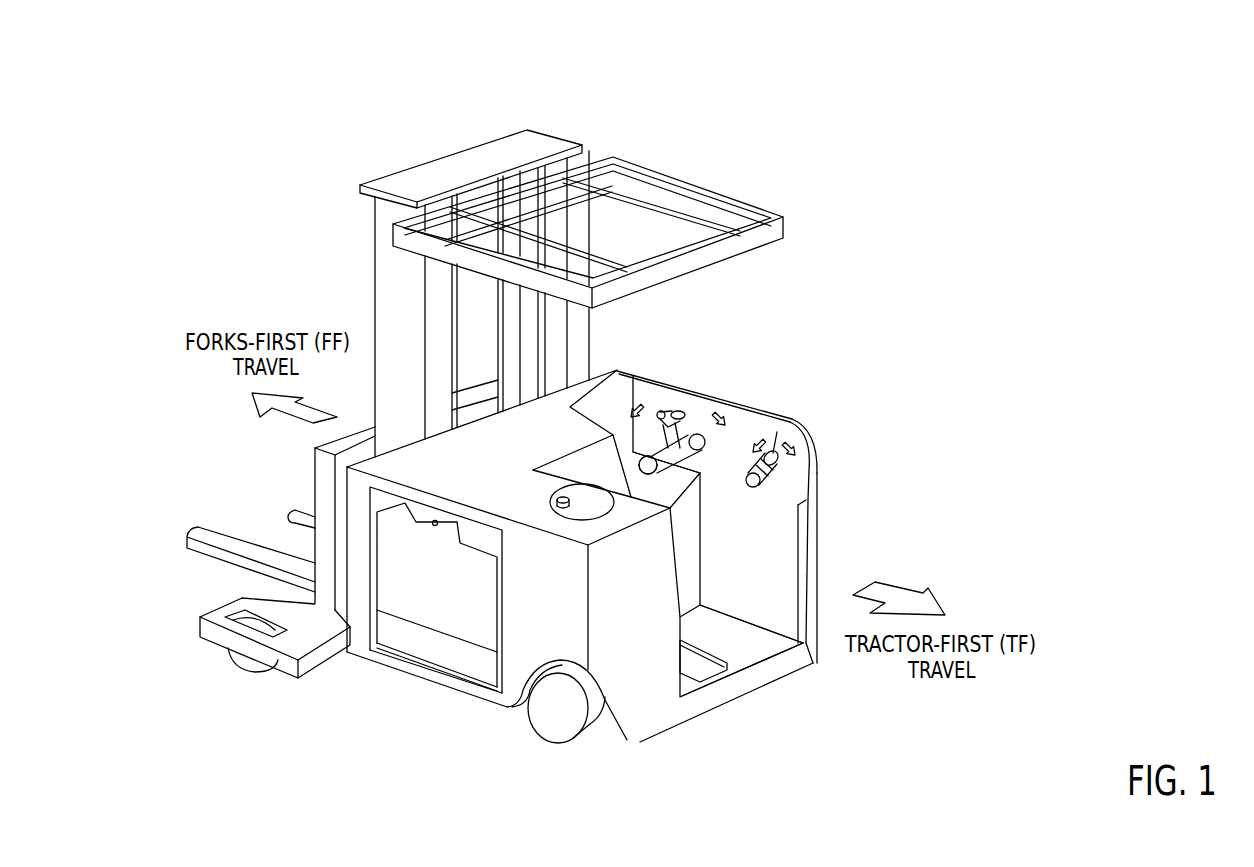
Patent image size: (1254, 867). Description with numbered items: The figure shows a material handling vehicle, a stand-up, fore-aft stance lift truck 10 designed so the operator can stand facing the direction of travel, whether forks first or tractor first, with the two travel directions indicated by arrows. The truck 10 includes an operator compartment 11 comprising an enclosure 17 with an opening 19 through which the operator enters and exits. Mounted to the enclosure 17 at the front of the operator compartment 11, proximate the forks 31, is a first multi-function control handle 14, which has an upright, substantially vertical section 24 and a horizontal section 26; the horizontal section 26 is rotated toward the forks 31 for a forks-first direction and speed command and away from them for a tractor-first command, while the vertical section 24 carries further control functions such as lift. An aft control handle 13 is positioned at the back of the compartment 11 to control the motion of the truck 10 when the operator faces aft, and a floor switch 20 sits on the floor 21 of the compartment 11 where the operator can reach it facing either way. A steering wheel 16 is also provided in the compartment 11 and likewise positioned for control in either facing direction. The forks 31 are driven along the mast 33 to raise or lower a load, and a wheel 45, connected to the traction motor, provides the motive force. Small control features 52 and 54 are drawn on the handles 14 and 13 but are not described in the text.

The lift truck 10 is at (725, 162).
The operator compartment 11 is at (817, 438).
The aft control handle 13 is at (786, 456).
The multi-function control handle 14 is at (691, 432).
The steering wheel 16 is at (566, 511).
The enclosure 17 is at (816, 558).
The opening 19 is at (760, 579).
The floor switch 20 is at (720, 677).
The floor 21 is at (763, 648).
The vertical section 24 is at (693, 427).
The horizontal section 26 is at (667, 459).
The forks 31 is at (213, 560).
The mast 33 is at (559, 138).
The wheel 45 is at (527, 727).
The control knob 52 is at (678, 411).
The steering handle stem 54 is at (771, 452).